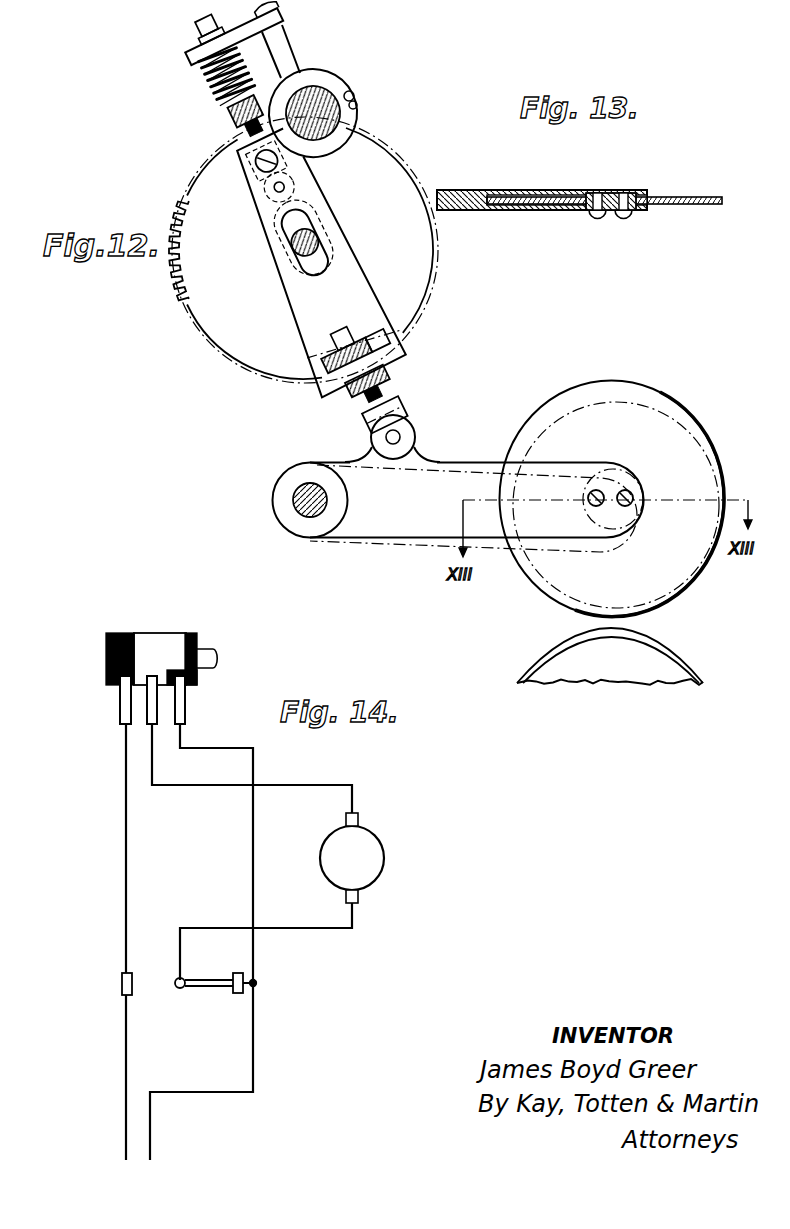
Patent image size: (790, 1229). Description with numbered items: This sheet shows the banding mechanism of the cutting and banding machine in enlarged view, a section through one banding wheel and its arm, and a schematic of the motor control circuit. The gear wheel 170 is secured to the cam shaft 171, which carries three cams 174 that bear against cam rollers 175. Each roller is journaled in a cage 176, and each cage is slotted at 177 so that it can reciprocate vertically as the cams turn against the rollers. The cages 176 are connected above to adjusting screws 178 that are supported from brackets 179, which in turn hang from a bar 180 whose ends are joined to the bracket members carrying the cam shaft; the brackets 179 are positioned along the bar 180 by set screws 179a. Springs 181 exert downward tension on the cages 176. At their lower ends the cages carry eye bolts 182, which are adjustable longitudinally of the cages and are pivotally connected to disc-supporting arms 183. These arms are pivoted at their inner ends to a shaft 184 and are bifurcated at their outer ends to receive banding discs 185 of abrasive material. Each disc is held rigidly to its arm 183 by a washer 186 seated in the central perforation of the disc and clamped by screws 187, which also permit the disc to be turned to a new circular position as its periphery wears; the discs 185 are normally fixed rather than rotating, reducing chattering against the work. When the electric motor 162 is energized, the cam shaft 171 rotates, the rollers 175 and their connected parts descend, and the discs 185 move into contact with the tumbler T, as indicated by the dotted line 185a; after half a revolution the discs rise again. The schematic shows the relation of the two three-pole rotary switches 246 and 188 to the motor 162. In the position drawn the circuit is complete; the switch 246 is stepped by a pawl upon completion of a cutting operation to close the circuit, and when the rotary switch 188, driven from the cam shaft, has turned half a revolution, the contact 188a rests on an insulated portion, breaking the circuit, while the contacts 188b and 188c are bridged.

In FIG. 12, the gear wheel 170 is at (405, 160).
In FIG. 12, the cam shaft 171 is at (300, 224).
In FIG. 12, the cam 174 is at (290, 235).
In FIG. 12, the cam roller 175 is at (287, 170).
In FIG. 12, the cage 176 is at (375, 293).
In FIG. 12, the slot 177 is at (322, 258).
In FIG. 12, the adjusting screw 178 is at (196, 24).
In FIG. 12, the bracket 179 is at (192, 58).
In FIG. 12, the set screw 179a is at (357, 99).
In FIG. 12, the bar 180 is at (322, 98).
In FIG. 12, the spring 181 is at (222, 87).
In FIG. 12, the eye bolt 182 is at (394, 385).
In FIG. 12, the disc-supporting arm 183 is at (457, 462).
In FIG. 13, the disc-supporting arm 183 is at (478, 191).
In FIG. 12, the shaft 184 is at (298, 492).
In FIG. 12, the banding disc 185 is at (655, 405).
In FIG. 13, the banding disc 185 is at (700, 200).
In FIG. 12, the dotted line position of banding disc 185a is at (556, 614).
In FIG. 12, the washer 186 is at (624, 516).
In FIG. 13, the washer 186 is at (606, 186).
In FIG. 12, the screw 187 is at (630, 492).
In FIG. 13, the screw 187 is at (620, 218).
In FIG. 14, the rotary switch 188 is at (174, 637).
In FIG. 14, the contact 188a is at (120, 703).
In FIG. 14, the contact 188b is at (150, 712).
In FIG. 14, the contact 188c is at (185, 708).
In FIG. 14, the electric motor 162 is at (368, 835).
In FIG. 14, the switch 246 is at (196, 990).
In FIG. 12, the tumbler T is at (665, 655).